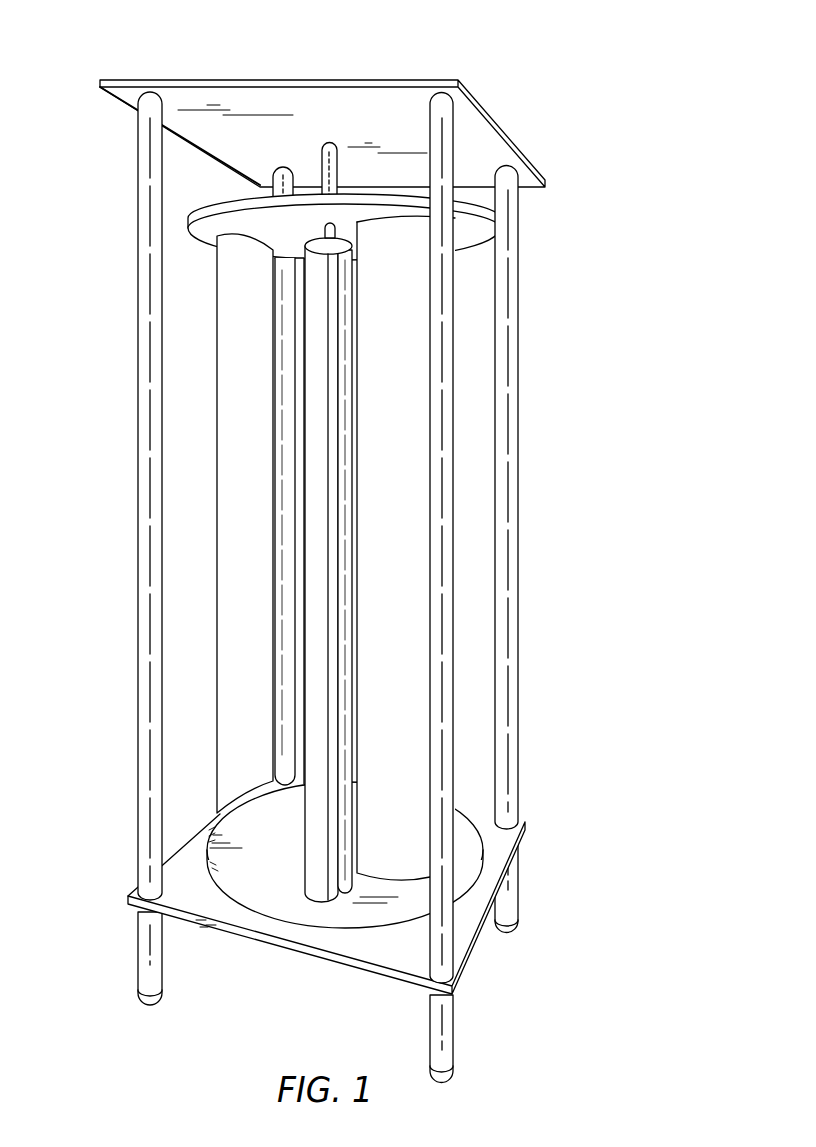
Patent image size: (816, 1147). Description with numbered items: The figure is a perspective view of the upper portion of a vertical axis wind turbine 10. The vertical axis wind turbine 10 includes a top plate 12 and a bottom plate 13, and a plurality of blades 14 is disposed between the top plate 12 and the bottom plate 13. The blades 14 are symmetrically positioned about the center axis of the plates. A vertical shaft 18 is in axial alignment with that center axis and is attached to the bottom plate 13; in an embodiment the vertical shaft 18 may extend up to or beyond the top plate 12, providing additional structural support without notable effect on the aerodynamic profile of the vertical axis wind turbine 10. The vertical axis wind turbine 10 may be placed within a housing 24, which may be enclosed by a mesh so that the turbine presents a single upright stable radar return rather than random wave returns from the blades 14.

The vertical axis wind turbine 10 is at (370, 543).
The top plate 12 is at (190, 230).
The bottom plate 13 is at (227, 863).
The blades 14 is at (395, 420).
The vertical shaft 18 is at (270, 460).
The housing 24 is at (152, 78).